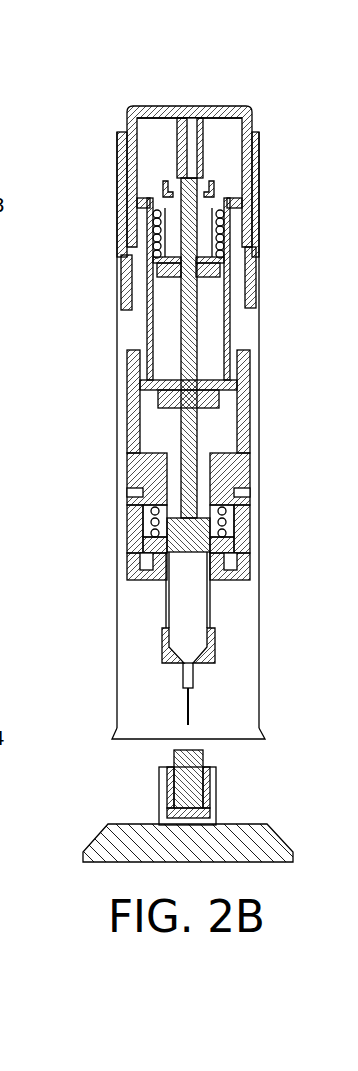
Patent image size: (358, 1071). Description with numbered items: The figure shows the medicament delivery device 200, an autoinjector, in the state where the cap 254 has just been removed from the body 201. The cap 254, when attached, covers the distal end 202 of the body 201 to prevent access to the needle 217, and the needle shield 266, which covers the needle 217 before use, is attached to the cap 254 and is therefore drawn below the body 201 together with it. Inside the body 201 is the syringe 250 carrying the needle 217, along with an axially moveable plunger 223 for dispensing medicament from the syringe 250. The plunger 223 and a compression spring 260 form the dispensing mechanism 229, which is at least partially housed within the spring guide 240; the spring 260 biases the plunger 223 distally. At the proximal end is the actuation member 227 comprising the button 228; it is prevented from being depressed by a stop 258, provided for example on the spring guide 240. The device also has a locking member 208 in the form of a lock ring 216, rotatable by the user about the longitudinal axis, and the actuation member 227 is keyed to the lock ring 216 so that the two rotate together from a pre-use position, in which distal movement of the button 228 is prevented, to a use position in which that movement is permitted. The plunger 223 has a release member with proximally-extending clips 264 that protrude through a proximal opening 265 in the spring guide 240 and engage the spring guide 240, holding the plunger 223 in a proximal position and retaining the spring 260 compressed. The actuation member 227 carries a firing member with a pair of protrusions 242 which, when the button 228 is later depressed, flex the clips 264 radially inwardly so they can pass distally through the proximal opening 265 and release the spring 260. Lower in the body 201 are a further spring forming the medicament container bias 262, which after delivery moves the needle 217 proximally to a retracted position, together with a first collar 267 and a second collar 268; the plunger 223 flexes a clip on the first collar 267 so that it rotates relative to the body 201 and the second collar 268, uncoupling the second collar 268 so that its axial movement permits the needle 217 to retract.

The medicament delivery device 200 is at (105, 78).
The body 201 is at (260, 382).
The distal end 202 is at (120, 740).
The locking member 208 is at (264, 181).
The lock ring 216 is at (118, 202).
The needle 217 is at (190, 712).
The plunger 223 is at (198, 348).
The actuation member 227 is at (257, 101).
The button 228 is at (188, 105).
The dispensing mechanism 229 is at (108, 282).
The spring guide 240 is at (147, 337).
The protrusions 242 is at (172, 155).
The syringe 250 is at (211, 615).
The cap 254 is at (276, 843).
The stop 258 is at (143, 210).
The compression spring 260 is at (224, 214).
The medicament container bias 262 is at (224, 522).
The clips 264 is at (172, 190).
The proximal opening 265 is at (222, 200).
The needle shield 266 is at (190, 788).
The first collar 267 is at (130, 545).
The second collar 268 is at (133, 425).